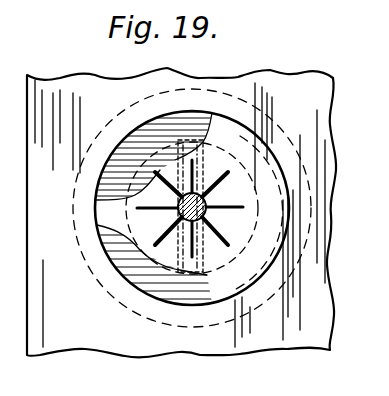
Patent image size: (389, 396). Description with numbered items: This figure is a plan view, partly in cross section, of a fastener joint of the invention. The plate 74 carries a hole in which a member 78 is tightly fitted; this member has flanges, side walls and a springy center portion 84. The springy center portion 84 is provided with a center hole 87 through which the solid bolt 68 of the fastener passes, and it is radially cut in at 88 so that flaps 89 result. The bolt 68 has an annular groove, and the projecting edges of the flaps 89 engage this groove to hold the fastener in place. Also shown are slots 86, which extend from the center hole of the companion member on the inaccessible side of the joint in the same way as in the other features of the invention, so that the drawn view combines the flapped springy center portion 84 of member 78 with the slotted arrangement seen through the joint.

The bolt 68 is at (212, 113).
The plate 74 is at (325, 147).
The member 78 is at (223, 150).
The springy center portion 84 is at (258, 197).
The slots 86 is at (175, 160).
The center hole 87 is at (222, 222).
The radial cuts 88 is at (228, 168).
The flaps 89 is at (228, 175).